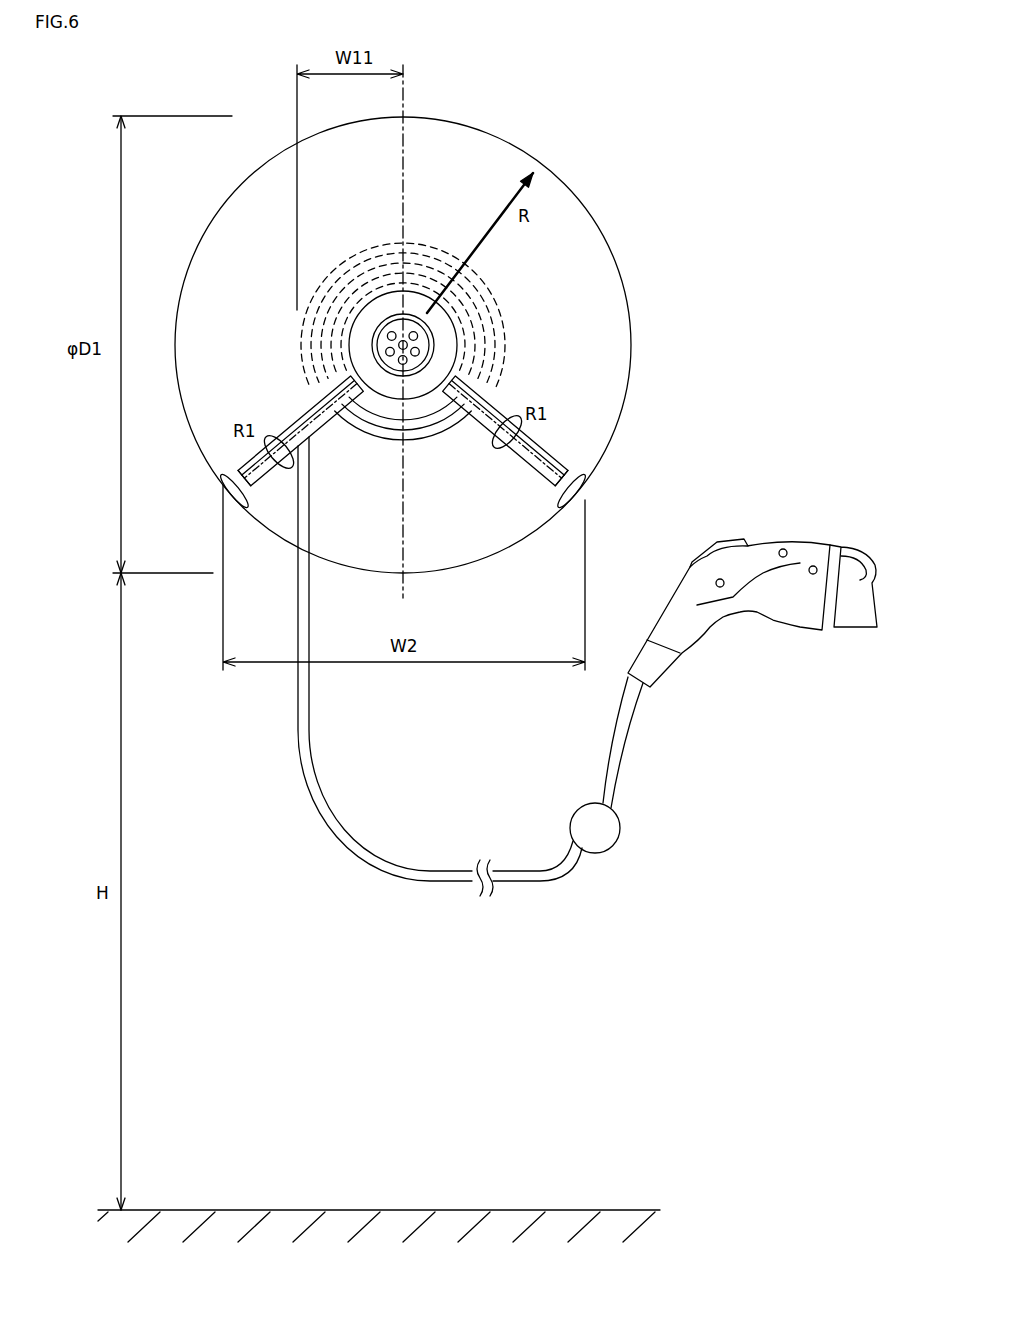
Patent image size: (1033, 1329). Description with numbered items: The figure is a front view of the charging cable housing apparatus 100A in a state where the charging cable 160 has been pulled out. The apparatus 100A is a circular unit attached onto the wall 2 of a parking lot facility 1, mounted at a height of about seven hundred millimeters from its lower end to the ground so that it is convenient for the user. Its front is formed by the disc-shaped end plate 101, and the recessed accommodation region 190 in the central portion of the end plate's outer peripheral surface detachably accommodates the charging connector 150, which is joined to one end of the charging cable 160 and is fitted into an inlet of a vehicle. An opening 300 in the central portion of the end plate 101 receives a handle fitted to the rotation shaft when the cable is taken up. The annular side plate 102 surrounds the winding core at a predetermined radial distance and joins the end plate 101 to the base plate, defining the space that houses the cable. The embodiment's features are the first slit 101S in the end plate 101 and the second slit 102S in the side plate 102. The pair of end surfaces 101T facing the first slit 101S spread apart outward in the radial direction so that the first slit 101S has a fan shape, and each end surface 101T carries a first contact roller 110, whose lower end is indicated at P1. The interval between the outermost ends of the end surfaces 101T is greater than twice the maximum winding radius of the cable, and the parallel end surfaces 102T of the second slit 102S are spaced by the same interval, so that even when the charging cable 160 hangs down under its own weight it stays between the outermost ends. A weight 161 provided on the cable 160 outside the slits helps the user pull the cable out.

The parking lot facility 1 is at (632, 1208).
The wall 2 is at (615, 1045).
The charging cable housing apparatus 100A is at (734, 815).
The end plate 101 is at (585, 268).
The first slit 101S is at (430, 510).
The end surface 101T is at (497, 403).
The side plate 102 is at (565, 184).
The second slit 102S is at (510, 542).
The end surface 102T is at (230, 482).
The first contact roller 110 is at (535, 450).
The charging connector 150 is at (785, 608).
The charging cable 160 is at (437, 880).
The weight 161 is at (603, 832).
The recessed accommodation region 190 is at (435, 340).
The opening 300 is at (404, 338).
The arm end point P1 is at (580, 470).